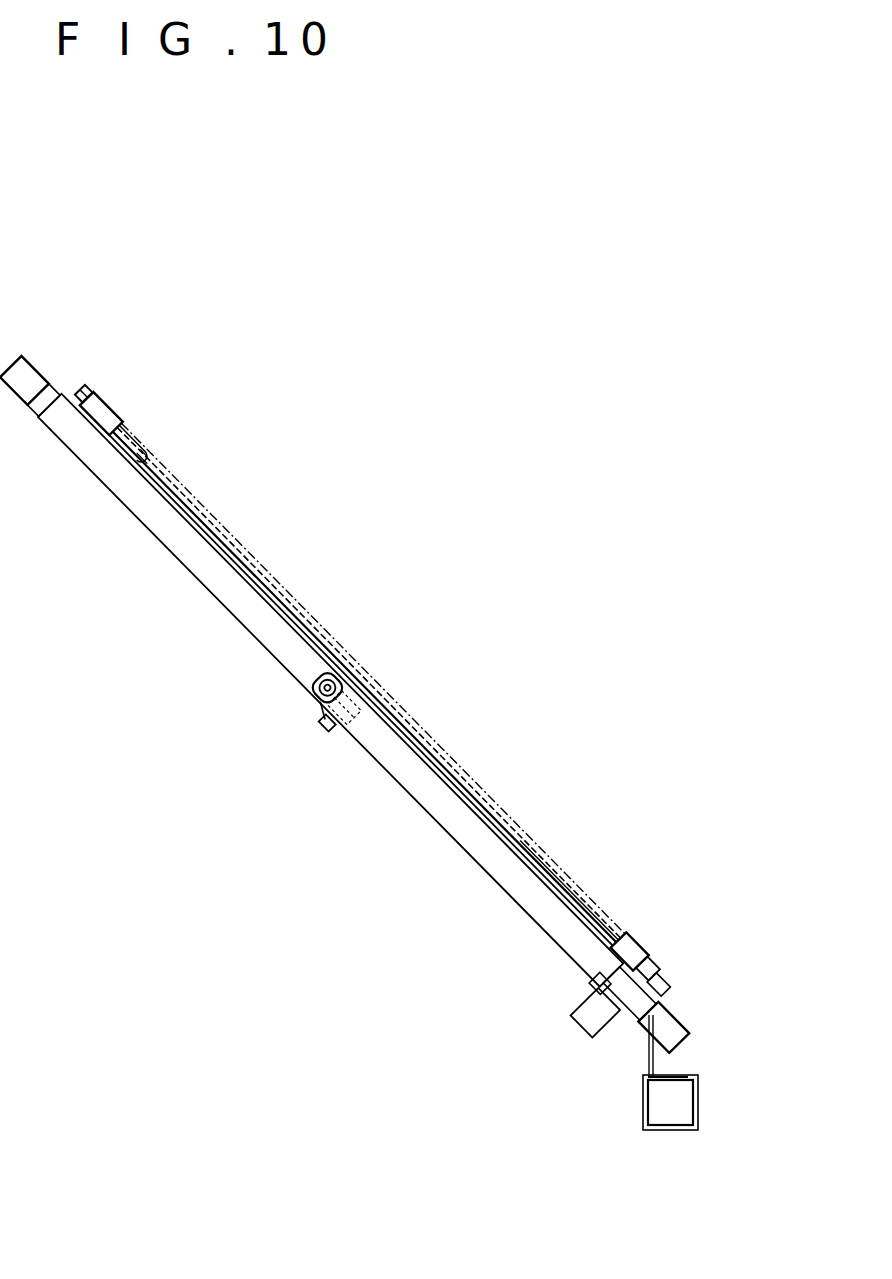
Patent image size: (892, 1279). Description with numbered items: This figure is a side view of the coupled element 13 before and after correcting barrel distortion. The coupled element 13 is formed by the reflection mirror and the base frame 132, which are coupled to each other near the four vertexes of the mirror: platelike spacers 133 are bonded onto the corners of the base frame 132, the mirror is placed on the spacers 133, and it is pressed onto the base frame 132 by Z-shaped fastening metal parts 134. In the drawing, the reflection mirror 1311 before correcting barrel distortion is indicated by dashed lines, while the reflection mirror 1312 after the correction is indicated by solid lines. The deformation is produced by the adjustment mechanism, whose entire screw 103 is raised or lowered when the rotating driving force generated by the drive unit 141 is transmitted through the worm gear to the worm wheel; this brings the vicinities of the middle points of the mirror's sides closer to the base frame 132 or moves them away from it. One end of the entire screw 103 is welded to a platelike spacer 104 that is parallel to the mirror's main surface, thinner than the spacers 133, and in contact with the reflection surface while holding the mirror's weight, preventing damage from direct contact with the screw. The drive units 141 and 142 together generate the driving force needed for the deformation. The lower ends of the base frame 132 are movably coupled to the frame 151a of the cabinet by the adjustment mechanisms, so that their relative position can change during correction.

The coupled element 13 is at (319, 599).
The base frame 132 is at (193, 555).
The drive unit 141 is at (28, 369).
The fastening metal part 134 is at (107, 403).
The spacer 133 is at (133, 455).
The reflection mirror before correcting barrel distortion 1311 is at (358, 671).
The spacer 104 is at (386, 695).
The reflection mirror after the correction 1312 is at (565, 886).
The entire screw 103 is at (320, 728).
The drive unit 142 is at (579, 1018).
The frame 151a is at (698, 1100).